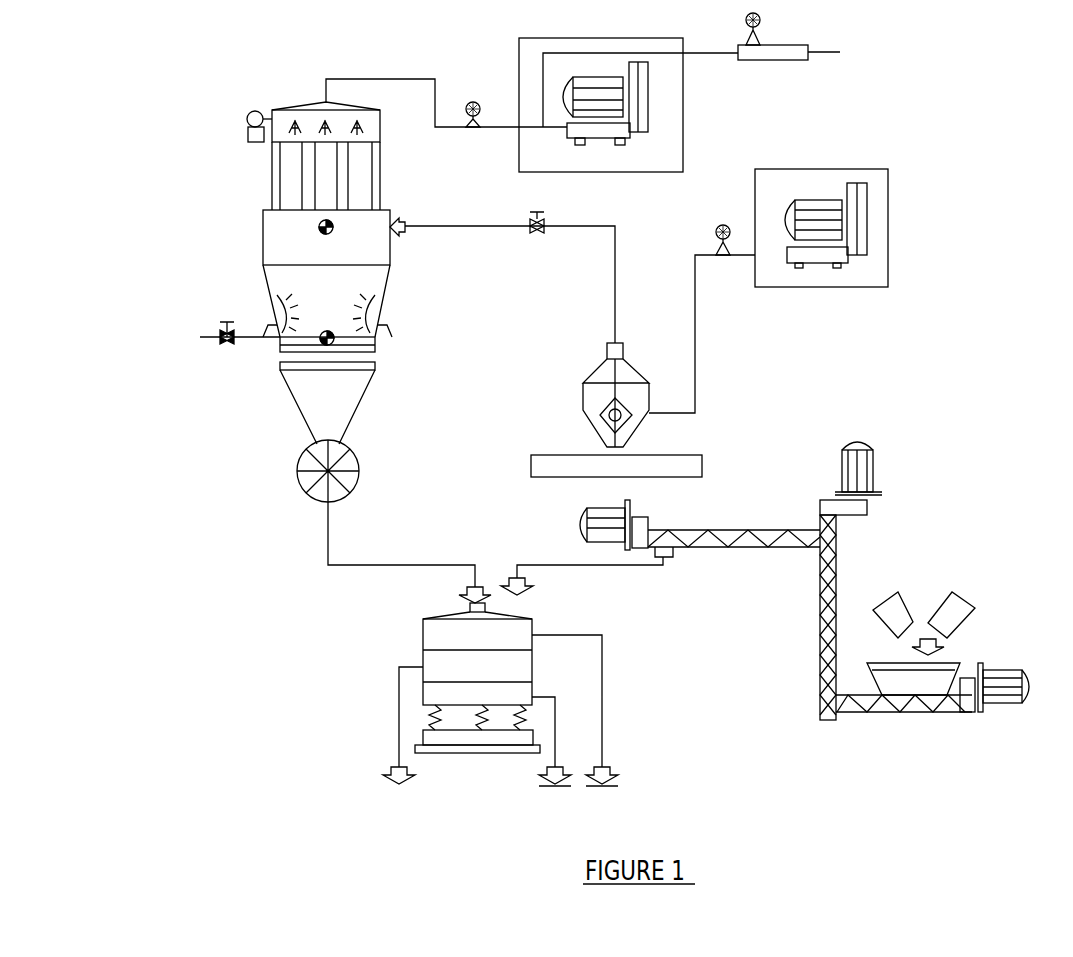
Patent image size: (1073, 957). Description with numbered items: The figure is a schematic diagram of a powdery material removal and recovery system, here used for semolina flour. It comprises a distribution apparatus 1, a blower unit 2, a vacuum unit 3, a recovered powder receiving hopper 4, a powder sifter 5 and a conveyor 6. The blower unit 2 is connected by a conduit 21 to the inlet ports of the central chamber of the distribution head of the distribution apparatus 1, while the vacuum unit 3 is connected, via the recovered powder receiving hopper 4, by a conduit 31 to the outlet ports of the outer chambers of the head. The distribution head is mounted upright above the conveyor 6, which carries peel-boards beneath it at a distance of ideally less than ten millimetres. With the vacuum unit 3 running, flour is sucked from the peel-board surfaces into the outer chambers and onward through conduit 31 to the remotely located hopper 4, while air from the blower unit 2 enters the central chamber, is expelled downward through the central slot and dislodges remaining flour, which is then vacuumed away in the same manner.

The distribution apparatus 1 is at (568, 393).
The blower unit 2 is at (930, 235).
The vacuum unit 3 is at (693, 130).
The recovered powder receiving hopper 4 is at (230, 232).
The powder sifter 5 is at (375, 703).
The conveyor 6 is at (558, 468).
The conduit 21 is at (702, 370).
The conduit 31 is at (610, 268).